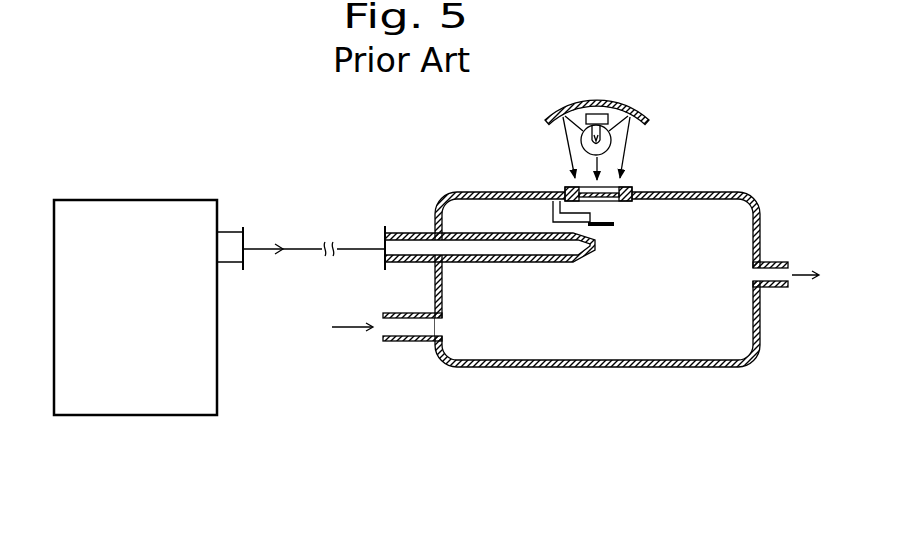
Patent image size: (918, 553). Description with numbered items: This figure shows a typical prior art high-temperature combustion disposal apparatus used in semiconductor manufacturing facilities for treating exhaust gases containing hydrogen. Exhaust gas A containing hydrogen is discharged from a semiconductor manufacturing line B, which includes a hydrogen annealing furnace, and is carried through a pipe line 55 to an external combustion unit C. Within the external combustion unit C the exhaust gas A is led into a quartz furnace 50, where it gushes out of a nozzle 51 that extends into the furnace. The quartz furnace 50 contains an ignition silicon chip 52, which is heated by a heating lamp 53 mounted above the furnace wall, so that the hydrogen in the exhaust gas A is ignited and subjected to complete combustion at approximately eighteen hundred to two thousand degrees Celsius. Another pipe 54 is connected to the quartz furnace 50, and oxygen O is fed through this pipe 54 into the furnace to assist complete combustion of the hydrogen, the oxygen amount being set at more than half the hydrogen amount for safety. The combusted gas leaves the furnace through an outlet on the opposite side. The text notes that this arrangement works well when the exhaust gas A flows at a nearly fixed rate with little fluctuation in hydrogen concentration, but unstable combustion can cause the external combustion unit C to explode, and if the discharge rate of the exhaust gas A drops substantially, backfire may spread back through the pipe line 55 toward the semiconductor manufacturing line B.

The semiconductor manufacturing line B is at (155, 200).
The exhaust gas A is at (277, 247).
The pipe line 55 is at (357, 247).
The inlet gas flow O is at (336, 327).
The external combustion unit C is at (599, 282).
The quartz furnace 50 is at (617, 369).
The nozzle 51 is at (589, 262).
The ignition silicon chip 52 is at (603, 227).
The heating lamp 53 is at (612, 146).
The pipe 54 is at (409, 327).